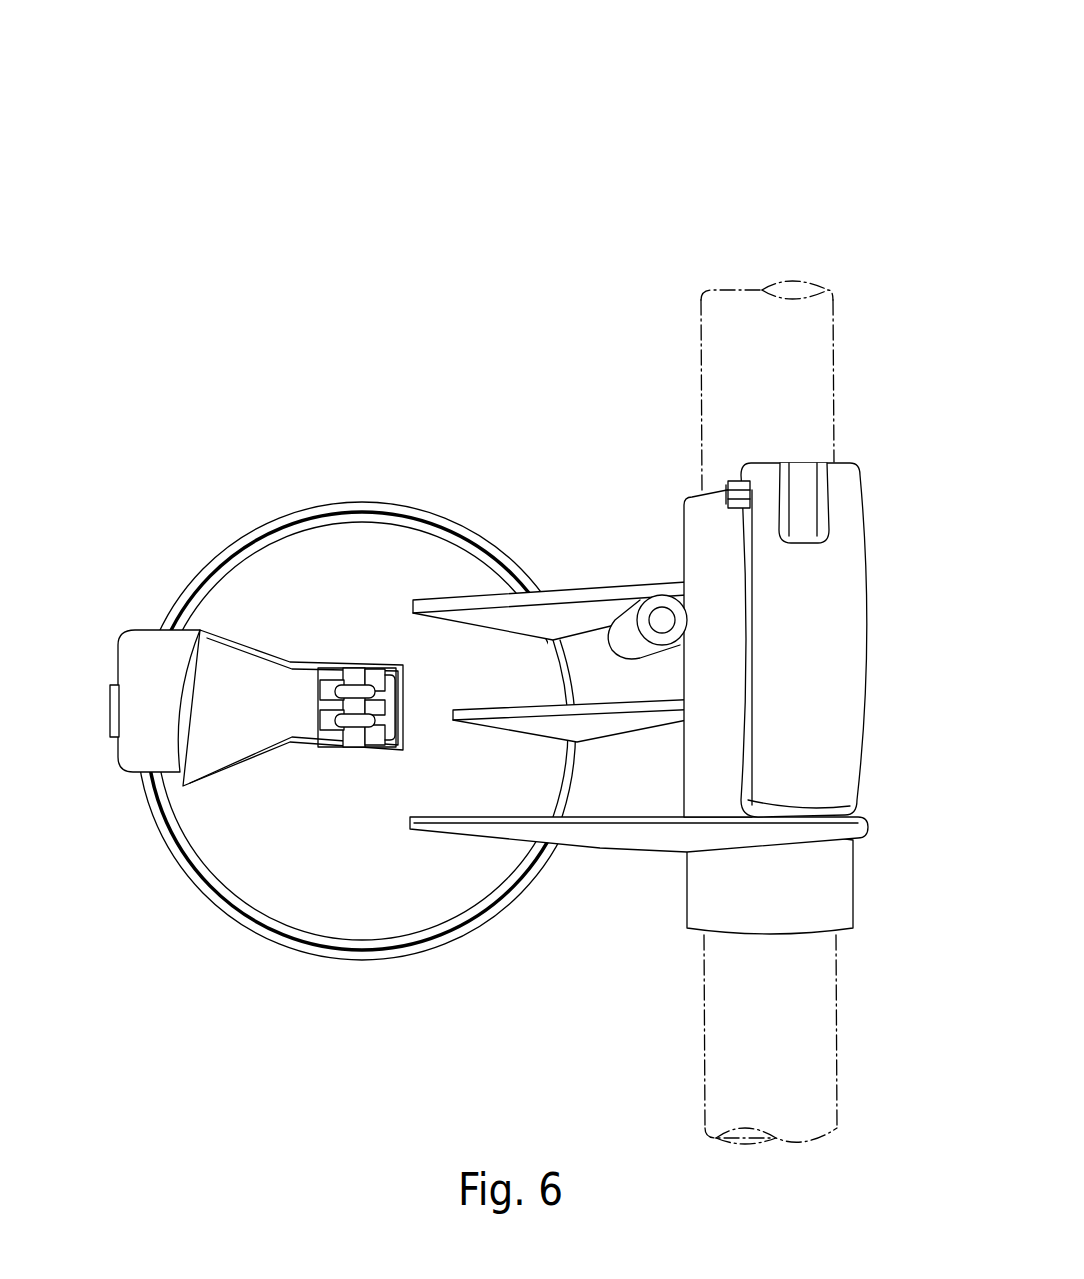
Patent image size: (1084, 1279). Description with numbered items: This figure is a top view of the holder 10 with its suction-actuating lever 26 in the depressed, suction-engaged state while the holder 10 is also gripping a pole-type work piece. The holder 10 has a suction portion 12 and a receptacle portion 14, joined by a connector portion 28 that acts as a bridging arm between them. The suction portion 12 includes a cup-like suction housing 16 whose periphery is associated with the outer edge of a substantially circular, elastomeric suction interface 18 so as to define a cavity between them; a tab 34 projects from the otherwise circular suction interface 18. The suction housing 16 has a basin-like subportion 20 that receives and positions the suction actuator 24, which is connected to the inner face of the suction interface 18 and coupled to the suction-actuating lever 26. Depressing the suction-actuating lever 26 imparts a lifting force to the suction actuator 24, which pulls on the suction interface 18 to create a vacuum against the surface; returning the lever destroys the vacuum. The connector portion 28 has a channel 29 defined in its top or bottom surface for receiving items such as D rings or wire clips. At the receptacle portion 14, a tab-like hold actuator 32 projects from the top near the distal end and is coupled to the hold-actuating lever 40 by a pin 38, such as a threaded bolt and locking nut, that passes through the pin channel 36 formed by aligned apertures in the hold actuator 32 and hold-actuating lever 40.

The holder 10 is at (610, 137).
The suction portion 12 is at (333, 455).
The receptacle portion 14 is at (843, 887).
The suction housing 16 is at (380, 550).
The suction interface 18 is at (250, 925).
The basin-like subportion 20 is at (182, 792).
The suction actuator 24 is at (354, 674).
The suction-actuating lever 26 is at (134, 760).
The connector portion 28 is at (592, 848).
The channel 29 is at (660, 620).
The hold actuator 32 is at (807, 477).
The tab 34 is at (108, 712).
The pin channel 36 is at (860, 493).
The pin 38 is at (727, 492).
The hold-actuating lever 40 is at (857, 720).